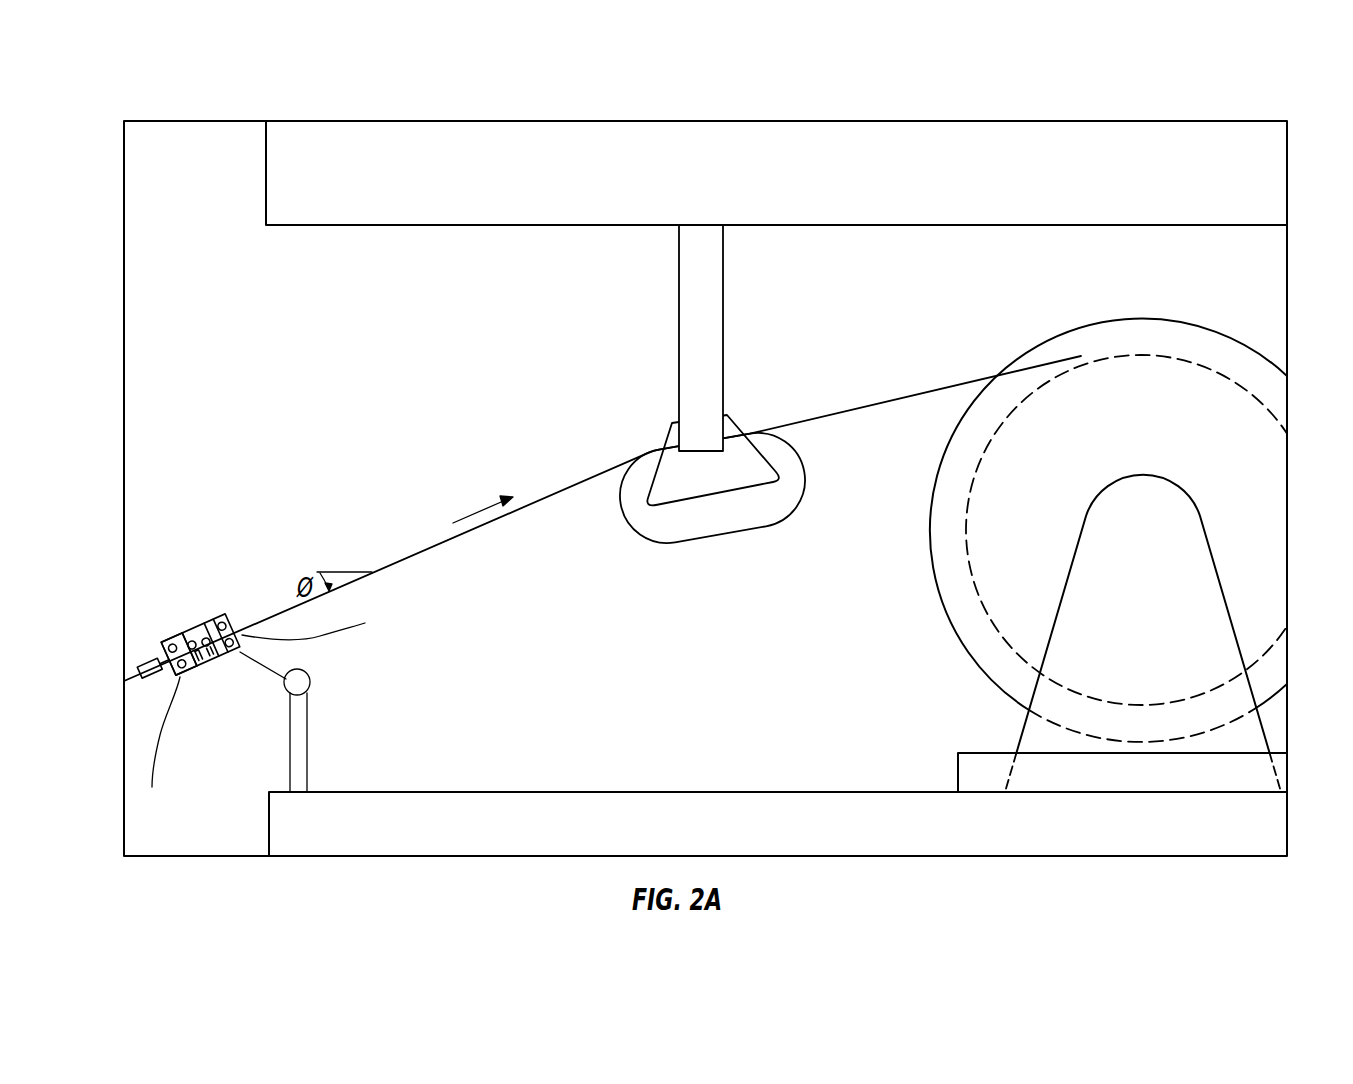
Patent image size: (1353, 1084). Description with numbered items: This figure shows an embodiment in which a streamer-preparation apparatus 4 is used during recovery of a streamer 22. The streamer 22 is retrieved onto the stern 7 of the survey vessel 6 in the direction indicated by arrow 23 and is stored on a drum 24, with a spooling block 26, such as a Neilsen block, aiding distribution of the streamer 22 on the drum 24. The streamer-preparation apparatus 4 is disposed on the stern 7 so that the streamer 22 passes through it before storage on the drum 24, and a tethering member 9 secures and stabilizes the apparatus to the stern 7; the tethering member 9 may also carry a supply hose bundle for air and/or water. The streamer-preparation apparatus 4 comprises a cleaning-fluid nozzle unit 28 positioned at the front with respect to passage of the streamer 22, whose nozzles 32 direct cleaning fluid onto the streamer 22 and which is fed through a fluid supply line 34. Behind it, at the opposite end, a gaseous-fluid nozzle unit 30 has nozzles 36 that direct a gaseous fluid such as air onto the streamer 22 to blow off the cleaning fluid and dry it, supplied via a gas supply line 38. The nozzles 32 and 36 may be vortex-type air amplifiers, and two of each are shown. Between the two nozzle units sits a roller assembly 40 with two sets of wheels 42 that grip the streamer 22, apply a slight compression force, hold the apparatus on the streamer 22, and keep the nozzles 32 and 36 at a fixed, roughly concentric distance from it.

The streamer-preparation apparatus 4 is at (170, 637).
The survey vessel 6 is at (847, 791).
The stern 7 is at (715, 791).
The tethering member 9 is at (276, 684).
The streamer 22 is at (406, 552).
The arrow 23 is at (480, 511).
The drum 24 is at (1271, 362).
The spooling block 26 is at (672, 430).
The cleaning-fluid nozzle unit 28 is at (167, 647).
The gaseous-fluid nozzle unit 30 is at (222, 617).
The nozzles 32 is at (145, 652).
The fluid supply line 34 is at (152, 765).
The nozzles 36 is at (240, 623).
The gas supply line 38 is at (377, 608).
The roller assembly 40 is at (197, 631).
The wheels 42 is at (185, 672).